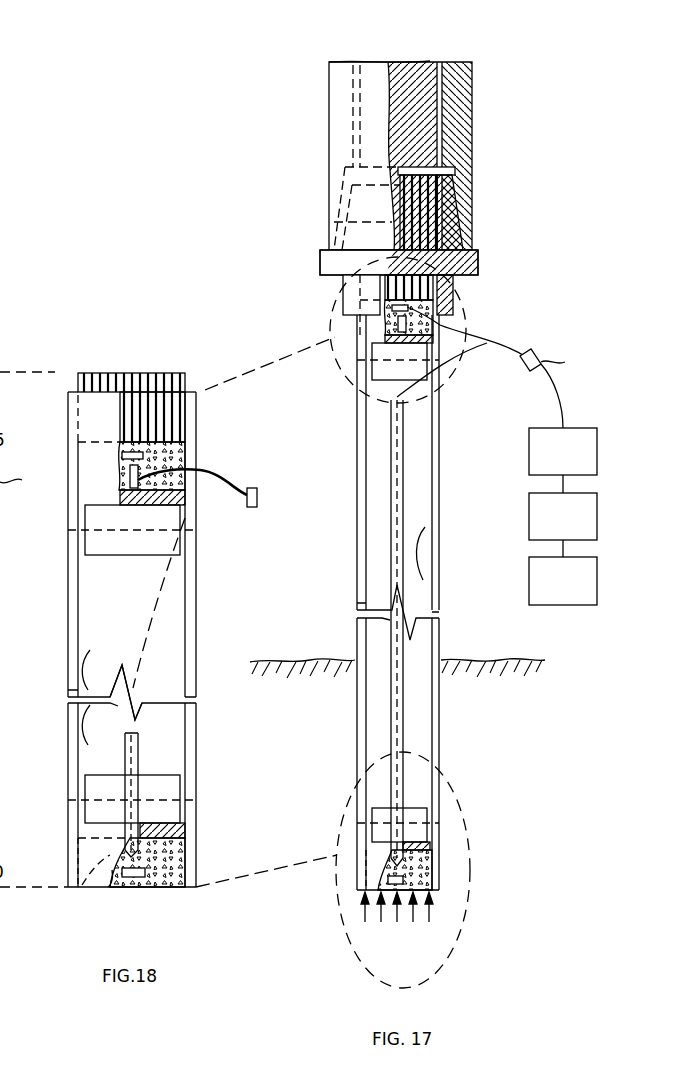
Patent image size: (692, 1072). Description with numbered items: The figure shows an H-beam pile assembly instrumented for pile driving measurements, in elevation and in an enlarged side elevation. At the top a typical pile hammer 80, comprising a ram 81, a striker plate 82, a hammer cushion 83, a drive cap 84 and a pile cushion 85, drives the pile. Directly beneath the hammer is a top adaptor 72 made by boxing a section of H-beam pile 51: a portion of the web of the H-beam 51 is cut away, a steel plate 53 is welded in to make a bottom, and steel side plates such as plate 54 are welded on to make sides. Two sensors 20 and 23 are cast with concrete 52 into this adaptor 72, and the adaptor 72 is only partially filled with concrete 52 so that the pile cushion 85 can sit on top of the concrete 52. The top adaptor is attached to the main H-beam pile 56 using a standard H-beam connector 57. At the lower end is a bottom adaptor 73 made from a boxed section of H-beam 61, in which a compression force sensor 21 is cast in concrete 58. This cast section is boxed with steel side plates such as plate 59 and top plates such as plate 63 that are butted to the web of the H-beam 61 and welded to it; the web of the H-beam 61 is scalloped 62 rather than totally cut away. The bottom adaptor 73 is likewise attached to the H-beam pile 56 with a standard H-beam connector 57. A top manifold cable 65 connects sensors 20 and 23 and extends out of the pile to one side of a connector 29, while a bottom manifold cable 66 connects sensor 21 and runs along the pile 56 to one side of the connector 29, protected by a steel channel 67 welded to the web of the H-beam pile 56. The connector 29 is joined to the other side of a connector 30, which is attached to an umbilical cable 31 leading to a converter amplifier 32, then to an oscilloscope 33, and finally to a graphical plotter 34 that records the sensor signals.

In FIG. 18, the sensor 20 is at (150, 450).
In FIG. 18, the compression force sensor 21 is at (148, 872).
In FIG. 18, the sensor 23 is at (130, 482).
In FIG. 17, the connector 29 is at (530, 350).
In FIG. 18, the connector 29 is at (255, 507).
In FIG. 17, the connector 30 is at (564, 361).
In FIG. 17, the umbilical cable 31 is at (553, 395).
In FIG. 17, the converter amplifier 32 is at (597, 430).
In FIG. 17, the oscilloscope 33 is at (597, 495).
In FIG. 17, the graphical plotter 34 is at (597, 558).
In FIG. 18, the H-beam pile section 51 is at (197, 405).
In FIG. 18, the concrete 52 is at (175, 455).
In FIG. 18, the steel plate 53 is at (185, 498).
In FIG. 18, the steel side plate 54 is at (90, 447).
In FIG. 17, the H-beam pile 56 is at (422, 552).
In FIG. 18, the H-beam pile 56 is at (68, 690).
In FIG. 18, the H-beam connector 57 is at (95, 545).
In FIG. 18, the concrete 58 is at (175, 883).
In FIG. 18, the steel side plate 59 is at (78, 855).
In FIG. 18, the H-beam section 61 is at (192, 808).
In FIG. 18, the scallop 62 is at (100, 870).
In FIG. 18, the top plate 63 is at (182, 828).
In FIG. 17, the top manifold cable 65 is at (487, 323).
In FIG. 18, the top manifold cable 65 is at (215, 471).
In FIG. 17, the bottom manifold cable 66 is at (467, 350).
In FIG. 18, the bottom manifold cable 66 is at (135, 665).
In FIG. 17, the steel channel 67 is at (403, 745).
In FIG. 18, the steel channel 67 is at (140, 738).
In FIG. 17, the adaptor 72 is at (360, 340).
In FIG. 18, the adaptor 72 is at (68, 392).
In FIG. 17, the bottom adaptor 73 is at (439, 888).
In FIG. 18, the bottom adaptor 73 is at (68, 843).
In FIG. 17, the pile hammer 80 is at (472, 118).
In FIG. 17, the ram 81 is at (425, 60).
In FIG. 17, the striker plate 82 is at (455, 170).
In FIG. 17, the hammer cushion 83 is at (430, 223).
In FIG. 17, the drive cap 84 is at (478, 253).
In FIG. 17, the pile cushion 85 is at (390, 290).
In FIG. 18, the pile cushion 85 is at (185, 373).